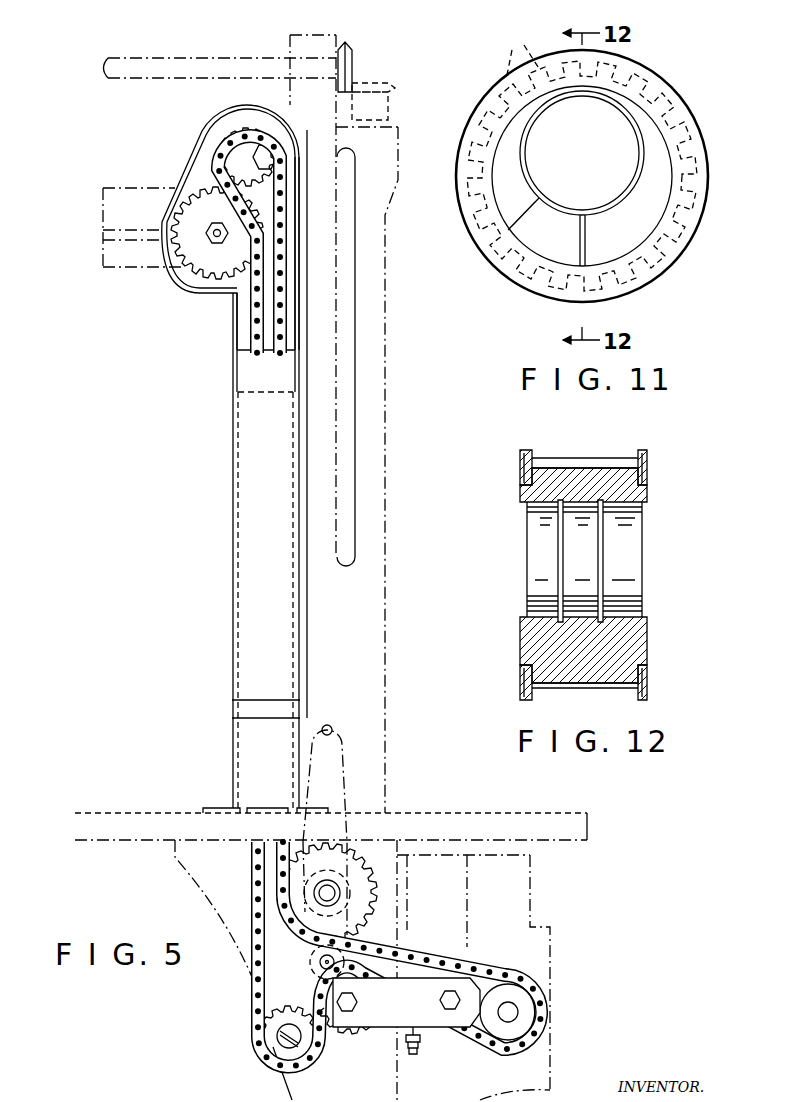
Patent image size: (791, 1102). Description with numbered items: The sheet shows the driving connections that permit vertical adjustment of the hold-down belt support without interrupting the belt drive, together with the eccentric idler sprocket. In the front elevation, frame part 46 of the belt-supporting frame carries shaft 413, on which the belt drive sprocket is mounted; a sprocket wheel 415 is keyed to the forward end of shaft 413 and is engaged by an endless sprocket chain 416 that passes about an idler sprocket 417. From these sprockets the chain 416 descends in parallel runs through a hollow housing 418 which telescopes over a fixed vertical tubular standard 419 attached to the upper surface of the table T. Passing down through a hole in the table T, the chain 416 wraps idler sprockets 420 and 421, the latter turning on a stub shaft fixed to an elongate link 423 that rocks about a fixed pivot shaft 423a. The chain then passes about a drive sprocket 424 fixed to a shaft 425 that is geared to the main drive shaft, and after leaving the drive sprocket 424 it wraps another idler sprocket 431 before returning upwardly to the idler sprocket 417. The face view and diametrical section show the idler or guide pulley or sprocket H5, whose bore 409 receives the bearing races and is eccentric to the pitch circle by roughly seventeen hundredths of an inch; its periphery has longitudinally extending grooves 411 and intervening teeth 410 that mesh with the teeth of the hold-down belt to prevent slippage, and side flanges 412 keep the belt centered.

In FIG. 5, the frame part 46 is at (144, 196).
In FIG. 5, the sprocket wheel 415 is at (188, 243).
In FIG. 5, the shaft 413 is at (216, 237).
In FIG. 5, the idler sprocket 417 is at (240, 140).
In FIG. 5, the endless sprocket chain 416 is at (256, 300).
In FIG. 5, the hollow housing 418 is at (263, 655).
In FIG. 5, the fixed vertical tubular standard 419 is at (255, 775).
In FIG. 5, the table T is at (110, 818).
In FIG. 5, the idler sprocket 431 is at (357, 875).
In FIG. 5, the idler sprocket 420 is at (273, 1053).
In FIG. 5, the idler sprocket 421 is at (327, 1032).
In FIG. 5, the elongate link 423 is at (392, 1016).
In FIG. 5, the fixed pivot shaft 423a is at (450, 1010).
In FIG. 5, the drive sprocket 424 is at (513, 990).
In FIG. 5, the shaft 425 is at (510, 1012).
In FIG. 11, the idler or guide pulley or sprocket H5 is at (690, 97).
In FIG. 12, the idler or guide pulley or sprocket H5 is at (635, 636).
In FIG. 11, the teeth 410 is at (488, 132).
In FIG. 12, the teeth 410 is at (614, 455).
In FIG. 11, the longitudinally extending grooves 411 is at (516, 50).
In FIG. 11, the bore 409 is at (613, 138).
In FIG. 12, the bore 409 is at (540, 570).
In FIG. 12, the side flanges 412 is at (522, 454).